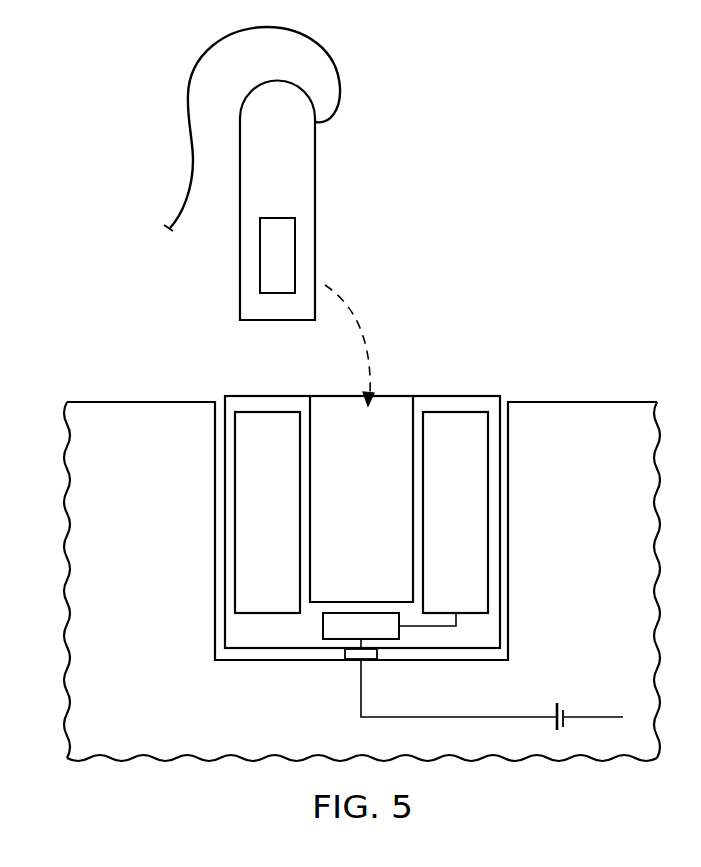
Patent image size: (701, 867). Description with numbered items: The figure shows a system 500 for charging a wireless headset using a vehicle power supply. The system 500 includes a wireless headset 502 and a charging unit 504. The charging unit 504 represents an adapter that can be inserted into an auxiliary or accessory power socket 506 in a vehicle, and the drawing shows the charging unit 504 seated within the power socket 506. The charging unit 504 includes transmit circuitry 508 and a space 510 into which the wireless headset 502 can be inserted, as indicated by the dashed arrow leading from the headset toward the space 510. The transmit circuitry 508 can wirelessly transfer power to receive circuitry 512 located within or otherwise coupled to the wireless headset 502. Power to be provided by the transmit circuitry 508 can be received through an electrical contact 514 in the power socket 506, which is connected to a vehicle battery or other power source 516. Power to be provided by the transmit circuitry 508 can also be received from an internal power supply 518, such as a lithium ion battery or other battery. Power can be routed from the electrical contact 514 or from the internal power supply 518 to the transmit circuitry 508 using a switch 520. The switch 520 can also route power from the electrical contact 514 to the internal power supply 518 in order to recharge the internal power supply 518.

The system 500 is at (573, 130).
The wireless headset 502 is at (316, 196).
The charging unit 504 is at (457, 397).
The power socket 506 is at (508, 495).
The transmit circuitry 508 is at (248, 543).
The space 510 is at (341, 541).
The receive circuitry 512 is at (260, 255).
The electrical contact 514 is at (351, 661).
The power source 516 is at (559, 700).
The internal power supply 518 is at (436, 543).
The switch 520 is at (343, 617).